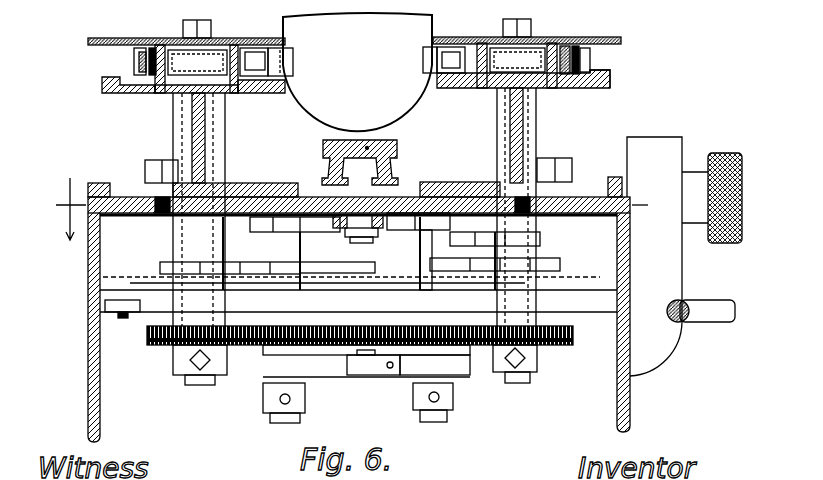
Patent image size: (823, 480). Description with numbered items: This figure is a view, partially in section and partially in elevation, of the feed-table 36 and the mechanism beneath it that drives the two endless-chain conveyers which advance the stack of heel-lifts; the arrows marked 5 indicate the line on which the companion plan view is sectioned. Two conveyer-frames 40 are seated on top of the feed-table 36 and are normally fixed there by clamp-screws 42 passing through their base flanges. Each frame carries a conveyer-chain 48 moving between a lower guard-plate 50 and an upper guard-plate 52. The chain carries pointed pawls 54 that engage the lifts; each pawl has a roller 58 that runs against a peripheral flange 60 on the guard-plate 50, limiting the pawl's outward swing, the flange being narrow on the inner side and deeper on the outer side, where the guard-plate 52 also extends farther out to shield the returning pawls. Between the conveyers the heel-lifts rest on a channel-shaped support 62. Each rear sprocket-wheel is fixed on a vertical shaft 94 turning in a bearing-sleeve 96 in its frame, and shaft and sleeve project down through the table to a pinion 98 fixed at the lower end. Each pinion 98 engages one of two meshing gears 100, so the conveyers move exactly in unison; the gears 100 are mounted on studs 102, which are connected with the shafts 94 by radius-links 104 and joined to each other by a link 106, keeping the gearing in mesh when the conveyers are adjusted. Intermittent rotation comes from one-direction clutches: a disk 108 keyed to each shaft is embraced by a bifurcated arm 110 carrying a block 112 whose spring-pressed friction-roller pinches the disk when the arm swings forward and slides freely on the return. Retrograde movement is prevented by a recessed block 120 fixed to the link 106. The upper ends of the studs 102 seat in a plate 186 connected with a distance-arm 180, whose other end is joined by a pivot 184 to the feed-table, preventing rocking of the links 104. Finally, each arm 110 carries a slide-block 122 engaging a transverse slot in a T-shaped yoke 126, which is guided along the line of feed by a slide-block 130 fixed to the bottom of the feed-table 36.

The section line 5 is at (350, 209).
The feed-table 36 is at (88, 192).
The conveyer-frame 40 is at (192, 124).
The clamp-screw 42 is at (145, 168).
The conveyer-chain 48 is at (146, 46).
The lower guard-plate 50 is at (165, 93).
The upper guard-plate 52 is at (115, 40).
The pointed pawl 54 is at (285, 60).
The roller 58 is at (455, 76).
The peripheral flange 60 is at (608, 72).
The channel-shaped support 62 is at (323, 158).
The vertical shaft 94 is at (214, 116).
The bearing-sleeve 96 is at (226, 146).
The pinion 98 is at (160, 346).
The gear 100 is at (350, 350).
The stud 102 is at (270, 415).
The radius-link 104 is at (242, 368).
The connecting link 106 is at (336, 385).
The clutch disk 108 is at (165, 262).
The bifurcated arm 110 is at (285, 244).
The block 112 is at (290, 268).
The recessed block 120 is at (378, 374).
The slide-block 122 is at (420, 238).
The T-shaped yoke 126 is at (432, 218).
The slide-block 130 is at (380, 240).
The distance-arm 180 is at (308, 303).
The pivot 184 is at (115, 320).
The plate 186 is at (390, 306).